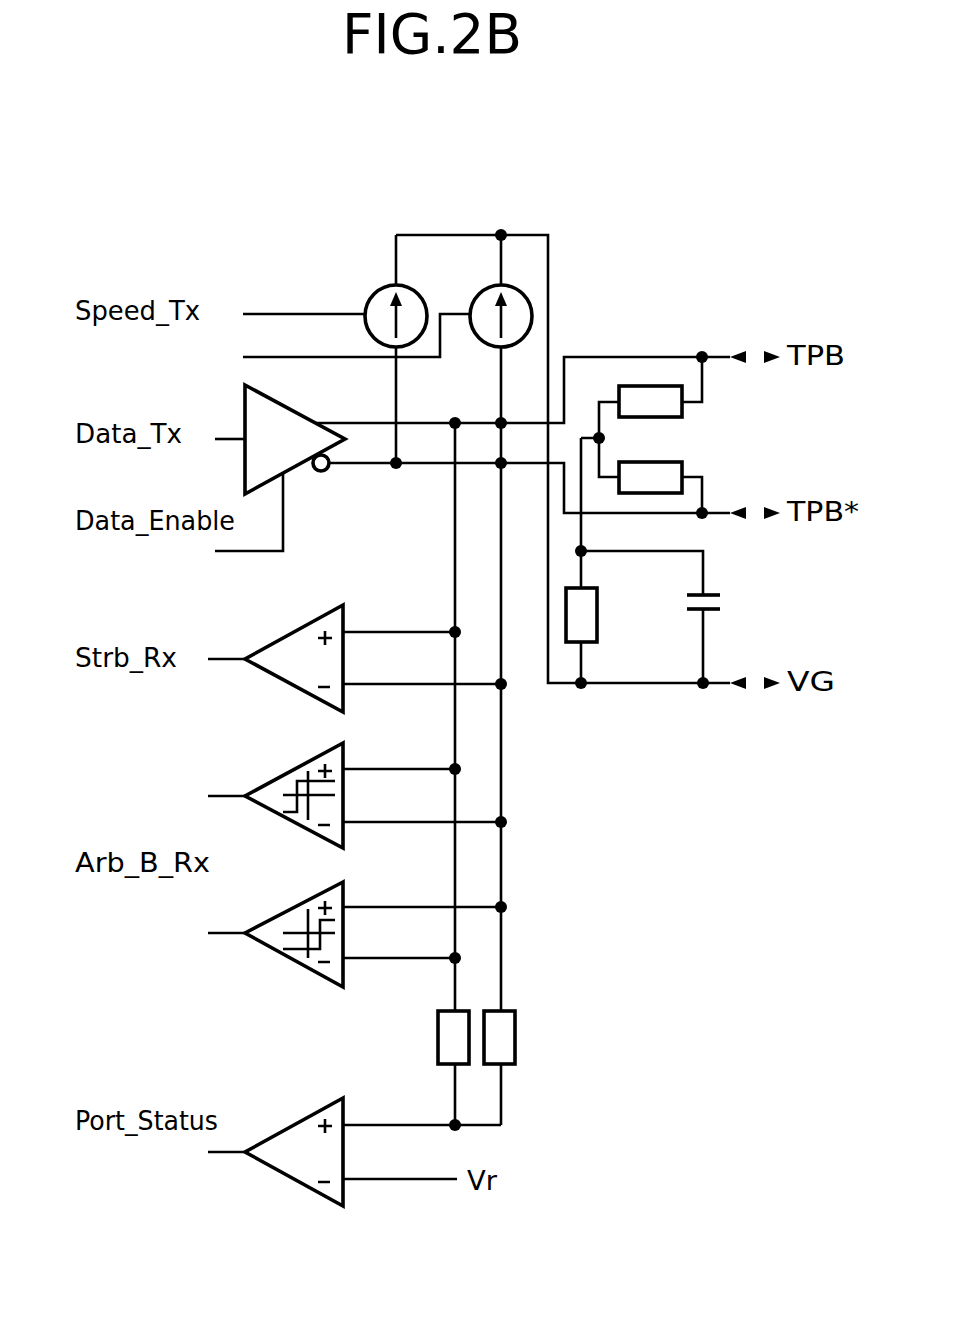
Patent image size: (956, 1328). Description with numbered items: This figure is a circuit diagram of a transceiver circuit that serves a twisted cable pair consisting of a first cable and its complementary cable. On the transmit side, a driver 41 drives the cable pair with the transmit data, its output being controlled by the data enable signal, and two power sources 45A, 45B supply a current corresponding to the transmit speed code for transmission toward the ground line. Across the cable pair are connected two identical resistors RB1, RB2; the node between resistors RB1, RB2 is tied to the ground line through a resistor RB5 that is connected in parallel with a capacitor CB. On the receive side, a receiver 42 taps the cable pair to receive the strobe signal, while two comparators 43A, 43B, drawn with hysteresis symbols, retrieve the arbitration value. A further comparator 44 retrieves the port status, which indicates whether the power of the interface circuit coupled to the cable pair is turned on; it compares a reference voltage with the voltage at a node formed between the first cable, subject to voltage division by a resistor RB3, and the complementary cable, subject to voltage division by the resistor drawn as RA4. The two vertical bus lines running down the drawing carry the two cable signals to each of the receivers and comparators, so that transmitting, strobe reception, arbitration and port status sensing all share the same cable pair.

The driver 41 is at (310, 403).
The receiver 42 is at (282, 638).
The comparator 43A is at (282, 776).
The comparator 43B is at (282, 953).
The comparator 44 is at (272, 1170).
The power source 45A is at (478, 290).
The power source 45B is at (373, 290).
The resistor RB1 is at (691, 401).
The resistor RB2 is at (691, 477).
The resistor RB3 is at (419, 1037).
The resistor RA4 is at (531, 1037).
The resistor RB5 is at (611, 615).
The capacitor CB is at (727, 603).